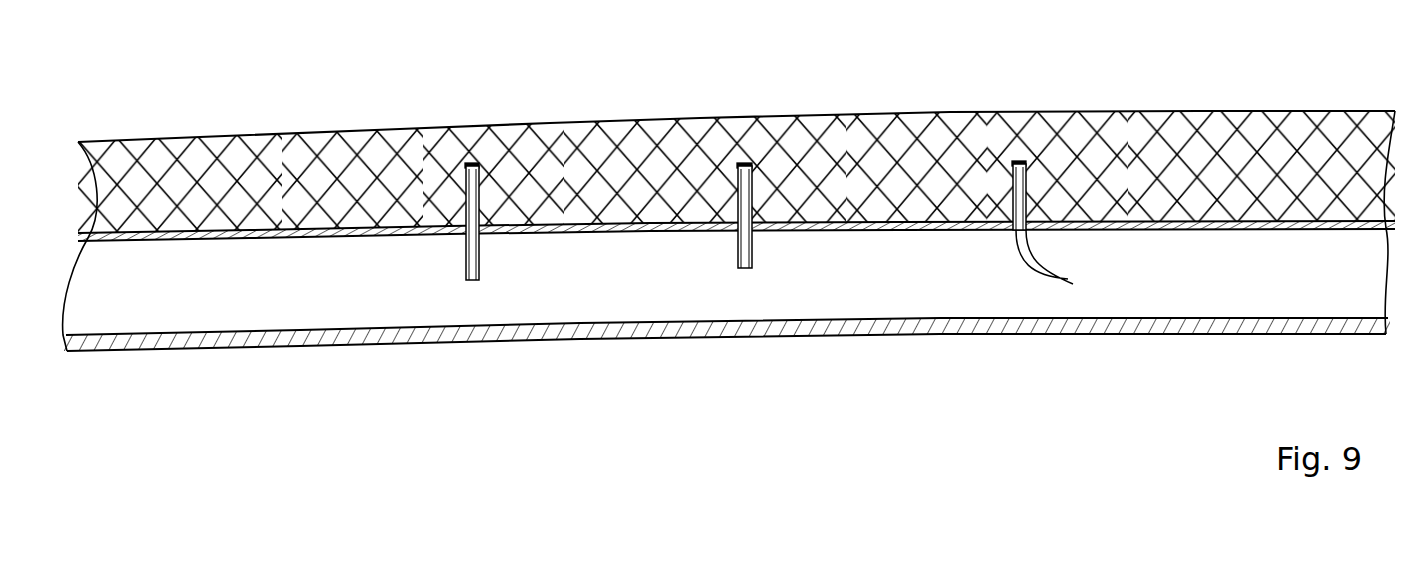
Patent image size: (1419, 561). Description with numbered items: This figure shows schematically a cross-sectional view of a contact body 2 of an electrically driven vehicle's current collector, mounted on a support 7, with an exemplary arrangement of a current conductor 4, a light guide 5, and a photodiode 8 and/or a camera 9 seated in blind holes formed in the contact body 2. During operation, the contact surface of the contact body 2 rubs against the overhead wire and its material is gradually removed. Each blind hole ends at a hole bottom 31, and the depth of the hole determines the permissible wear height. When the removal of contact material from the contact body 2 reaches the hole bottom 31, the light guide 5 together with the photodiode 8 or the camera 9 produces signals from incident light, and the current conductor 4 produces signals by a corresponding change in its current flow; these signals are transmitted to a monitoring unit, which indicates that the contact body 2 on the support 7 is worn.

The contact body 2 is at (663, 197).
The current conductor 4 is at (555, 123).
The light guide 5 is at (1078, 113).
The support 7 is at (922, 338).
The photodiode 8 is at (801, 150).
The camera 9 is at (755, 165).
The hole bottom 31 is at (778, 155).